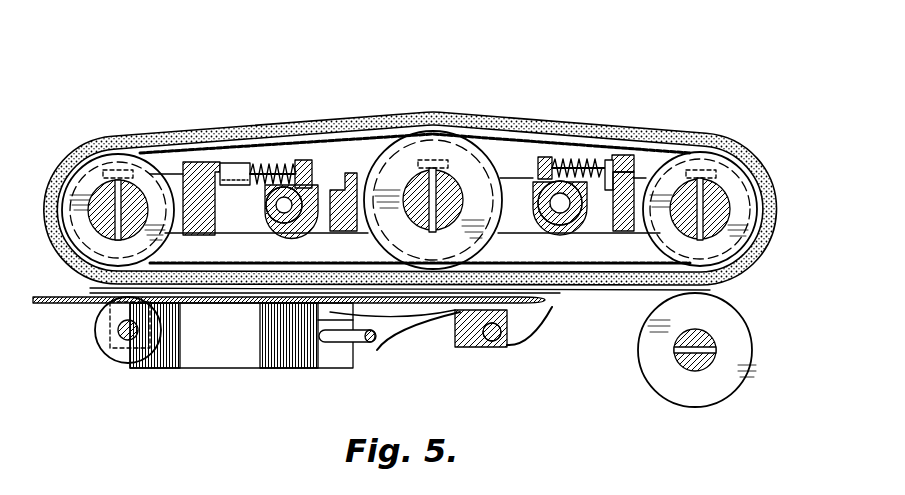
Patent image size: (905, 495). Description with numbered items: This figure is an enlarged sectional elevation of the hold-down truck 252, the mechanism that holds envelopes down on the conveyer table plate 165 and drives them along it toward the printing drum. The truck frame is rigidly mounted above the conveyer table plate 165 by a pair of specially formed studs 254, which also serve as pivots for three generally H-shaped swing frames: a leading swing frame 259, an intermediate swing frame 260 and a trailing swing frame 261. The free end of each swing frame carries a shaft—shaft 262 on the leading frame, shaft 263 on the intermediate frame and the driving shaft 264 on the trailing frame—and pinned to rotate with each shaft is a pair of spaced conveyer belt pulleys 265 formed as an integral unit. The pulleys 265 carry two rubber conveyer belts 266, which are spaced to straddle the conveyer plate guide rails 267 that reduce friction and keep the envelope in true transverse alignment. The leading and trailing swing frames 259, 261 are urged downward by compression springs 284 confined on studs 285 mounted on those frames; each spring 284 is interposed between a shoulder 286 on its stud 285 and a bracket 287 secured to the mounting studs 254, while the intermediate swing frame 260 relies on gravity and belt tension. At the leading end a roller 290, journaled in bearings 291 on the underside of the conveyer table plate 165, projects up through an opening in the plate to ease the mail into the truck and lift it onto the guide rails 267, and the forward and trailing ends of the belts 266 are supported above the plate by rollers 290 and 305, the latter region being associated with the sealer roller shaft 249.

The hold-down truck 252 is at (437, 84).
The shaft 262 is at (97, 190).
The shaft 263 is at (455, 170).
The driving shaft 264 is at (712, 200).
The conveyer belt pulleys 265 is at (105, 172).
The conveyer belts 266 is at (193, 131).
The studs 254 is at (312, 195).
The leading swing frame 259 is at (242, 234).
The intermediate swing frame 260 is at (338, 233).
The trailing swing frame 261 is at (592, 231).
The compression springs 284 is at (272, 160).
The studs 285 is at (335, 165).
The shoulders 286 is at (242, 186).
The brackets 287 is at (308, 158).
The conveyer table plate 165 is at (52, 275).
The conveyer plate guide rails 267 is at (238, 305).
The roller 290 is at (125, 364).
The bearings 291 is at (95, 332).
The roller 305 is at (738, 328).
The sealer roller shaft 249 is at (680, 372).